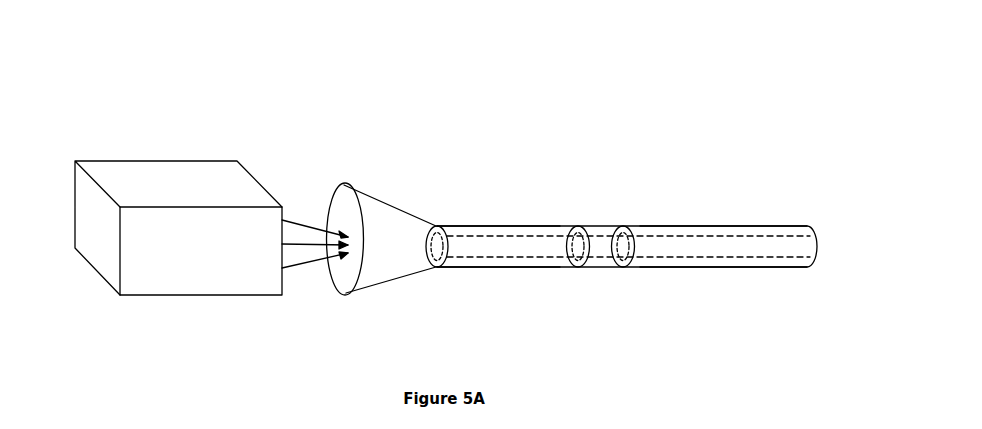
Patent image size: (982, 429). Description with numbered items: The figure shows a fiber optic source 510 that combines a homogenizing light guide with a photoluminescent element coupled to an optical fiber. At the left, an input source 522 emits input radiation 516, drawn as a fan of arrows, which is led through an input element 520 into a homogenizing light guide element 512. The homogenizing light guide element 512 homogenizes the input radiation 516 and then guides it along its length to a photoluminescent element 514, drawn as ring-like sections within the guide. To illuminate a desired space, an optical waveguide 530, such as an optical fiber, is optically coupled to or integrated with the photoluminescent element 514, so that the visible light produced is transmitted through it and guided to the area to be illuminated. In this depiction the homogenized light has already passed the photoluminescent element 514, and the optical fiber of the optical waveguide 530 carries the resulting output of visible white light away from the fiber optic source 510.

The fiber optic source 510 is at (663, 310).
The homogenizing light guide element 512 is at (488, 228).
The photoluminescent element 514 is at (603, 268).
The input radiation 516 is at (295, 213).
The input element 520 is at (395, 263).
The input source 522 is at (178, 228).
The optical waveguide 530 is at (667, 230).